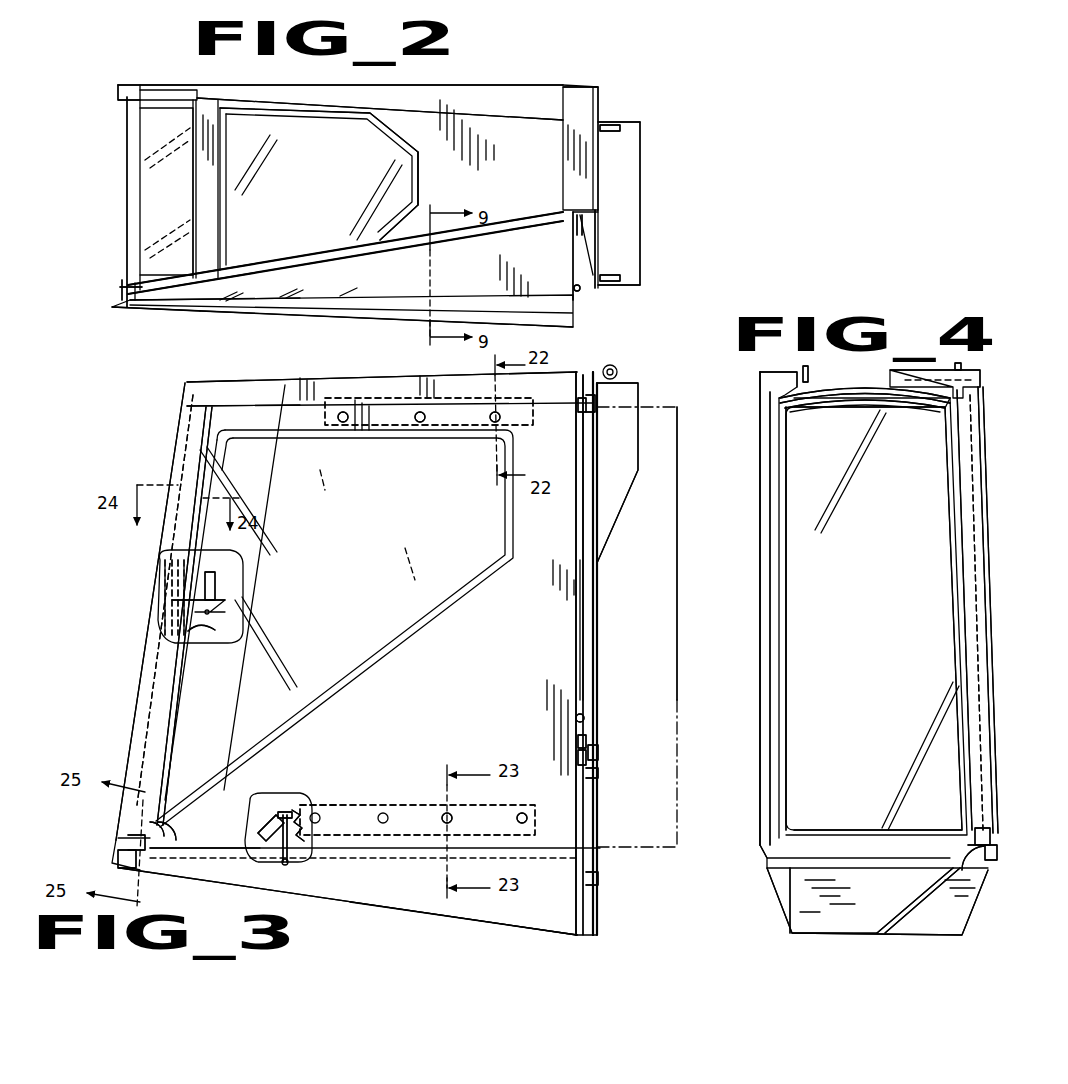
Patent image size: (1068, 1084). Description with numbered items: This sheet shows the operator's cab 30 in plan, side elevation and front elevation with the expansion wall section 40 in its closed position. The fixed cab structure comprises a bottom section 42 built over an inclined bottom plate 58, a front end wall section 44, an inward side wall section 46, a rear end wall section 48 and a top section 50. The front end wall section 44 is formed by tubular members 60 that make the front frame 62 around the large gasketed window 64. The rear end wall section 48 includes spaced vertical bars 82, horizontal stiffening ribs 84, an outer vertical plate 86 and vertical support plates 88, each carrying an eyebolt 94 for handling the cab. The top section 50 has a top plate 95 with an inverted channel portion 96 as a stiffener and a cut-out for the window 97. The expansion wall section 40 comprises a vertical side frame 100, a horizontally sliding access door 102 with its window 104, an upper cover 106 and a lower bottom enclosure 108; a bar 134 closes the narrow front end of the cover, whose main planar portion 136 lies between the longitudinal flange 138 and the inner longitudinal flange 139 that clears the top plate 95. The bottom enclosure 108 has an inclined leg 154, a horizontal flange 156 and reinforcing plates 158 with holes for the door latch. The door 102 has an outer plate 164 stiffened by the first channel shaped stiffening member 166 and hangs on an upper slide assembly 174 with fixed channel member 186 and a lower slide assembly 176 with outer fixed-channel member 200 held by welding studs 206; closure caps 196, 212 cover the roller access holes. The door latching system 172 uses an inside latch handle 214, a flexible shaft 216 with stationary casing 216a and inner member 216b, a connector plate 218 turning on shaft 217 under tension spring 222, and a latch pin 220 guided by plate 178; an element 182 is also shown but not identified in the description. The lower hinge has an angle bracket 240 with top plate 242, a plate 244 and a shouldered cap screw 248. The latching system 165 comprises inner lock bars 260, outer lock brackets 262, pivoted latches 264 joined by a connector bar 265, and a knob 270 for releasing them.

In FIG. 2, the cab 30 is at (625, 100).
In FIG. 3, the cab 30 is at (150, 447).
In FIG. 4, the cab 30 is at (767, 884).
In FIG. 2, the expansion wall section 40 is at (265, 312).
In FIG. 3, the expansion wall section 40 is at (568, 636).
In FIG. 4, the expansion wall section 40 is at (992, 531).
In FIG. 4, the bottom section 42 is at (788, 910).
In FIG. 2, the front end wall section 44 is at (125, 177).
In FIG. 3, the front end wall section 44 is at (118, 823).
In FIG. 4, the front end wall section 44 is at (937, 506).
In FIG. 2, the inward side wall section 46 is at (412, 88).
In FIG. 4, the inward side wall section 46 is at (758, 550).
In FIG. 2, the rear end wall section 48 is at (623, 160).
In FIG. 3, the rear end wall section 48 is at (598, 550).
In FIG. 2, the top section 50 is at (518, 124).
In FIG. 4, the top section 50 is at (870, 380).
In FIG. 4, the inclined bottom plate 58 is at (815, 925).
In FIG. 2, the tubular members 60 is at (162, 95).
In FIG. 4, the tubular members 60 is at (774, 437).
In FIG. 2, the front frame 62 is at (128, 100).
In FIG. 4, the front frame 62 is at (768, 417).
In FIG. 2, the gasketed window 64 is at (145, 131).
In FIG. 4, the gasketed window 64 is at (797, 460).
In FIG. 3, the spaced vertical bars 82 is at (585, 795).
In FIG. 2, the horizontal stiffening ribs 84 is at (590, 213).
In FIG. 3, the horizontal stiffening ribs 84 is at (597, 774).
In FIG. 2, the outer vertical plate 86 is at (600, 240).
In FIG. 3, the outer vertical plate 86 is at (595, 652).
In FIG. 2, the vertical support plates 88 is at (638, 121).
In FIG. 3, the vertical support plates 88 is at (628, 470).
In FIG. 2, the eyebolt 94 is at (622, 129).
In FIG. 3, the eyebolt 94 is at (618, 372).
In FIG. 4, the eyebolt 94 is at (805, 366).
In FIG. 2, the top plate 95 is at (461, 174).
In FIG. 4, the top plate 95 is at (822, 385).
In FIG. 2, the inverted channel portion 96 is at (338, 96).
In FIG. 4, the inverted channel portion 96 is at (762, 382).
In FIG. 2, the window 97 is at (316, 190).
In FIG. 4, the window 97 is at (850, 395).
In FIG. 4, the vertical side frame 100 is at (990, 398).
In FIG. 2, the horizontally sliding access door 102 is at (135, 313).
In FIG. 3, the horizontally sliding access door 102 is at (135, 668).
In FIG. 4, the horizontally sliding access door 102 is at (982, 439).
In FIG. 2, the window 104 is at (200, 303).
In FIG. 3, the window 104 is at (182, 732).
In FIG. 2, the upper cover 106 is at (392, 278).
In FIG. 4, the upper cover 106 is at (980, 373).
In FIG. 3, the lower bottom enclosure 108 is at (410, 900).
In FIG. 4, the lower bottom enclosure 108 is at (945, 923).
In FIG. 2, the bar 134 is at (130, 291).
In FIG. 3, the bar 134 is at (165, 580).
In FIG. 4, the bar 134 is at (968, 577).
In FIG. 2, the main planar portion 136 is at (272, 266).
In FIG. 4, the main planar portion 136 is at (980, 383).
In FIG. 3, the longitudinal flange 138 is at (200, 392).
In FIG. 4, the inner longitudinal flange 139 is at (940, 393).
In FIG. 3, the inclined leg 154 is at (450, 910).
In FIG. 4, the horizontal flange 156 is at (960, 900).
In FIG. 3, the reinforcing plates 158 is at (300, 860).
In FIG. 2, the outer plate 164 is at (570, 319).
In FIG. 3, the outer plate 164 is at (572, 592).
In FIG. 2, the latching system 165 is at (590, 225).
In FIG. 3, the latching system 165 is at (590, 572).
In FIG. 3, the first channel shaped stiffening member 166 is at (188, 633).
In FIG. 3, the door latching system 172 is at (215, 608).
In FIG. 3, the upper slide assembly 174 is at (365, 428).
In FIG. 3, the lower slide assembly 176 is at (420, 800).
In FIG. 3, the plate 178 is at (262, 855).
In FIG. 3, the bolt 182 is at (230, 855).
In FIG. 3, the fixed channel member 186 is at (490, 427).
In FIG. 3, the spring type closure caps 196 is at (420, 410).
In FIG. 3, the outer fixed-channel member 200 is at (457, 812).
In FIG. 3, the welding studs 206 is at (578, 408).
In FIG. 3, the spring type closure caps 212 is at (517, 823).
In FIG. 3, the inside latch handle 214 is at (215, 600).
In FIG. 3, the flexible shaft 216 is at (160, 708).
In FIG. 3, the stationary casing 216a is at (165, 632).
In FIG. 3, the inner flexible movable member 216b is at (165, 625).
In FIG. 3, the shaft 217 is at (292, 808).
In FIG. 3, the connector plate 218 is at (300, 812).
In FIG. 3, the latch pin 220 is at (288, 864).
In FIG. 3, the tension spring 222 is at (334, 812).
In FIG. 3, the angle bracket 240 is at (125, 862).
In FIG. 4, the angle bracket 240 is at (992, 860).
In FIG. 4, the top plate 242 is at (992, 840).
In FIG. 3, the plate 244 is at (126, 846).
In FIG. 4, the plate 244 is at (968, 845).
In FIG. 4, the shouldered cap screw 248 is at (976, 830).
In FIG. 3, the inner lock bars 260 is at (577, 765).
In FIG. 2, the outer lock brackets 262 is at (585, 292).
In FIG. 3, the outer lock brackets 262 is at (594, 410).
In FIG. 3, the pivoted latches 264 is at (578, 402).
In FIG. 3, the connector bar 265 is at (583, 652).
In FIG. 3, the knob 270 is at (576, 716).